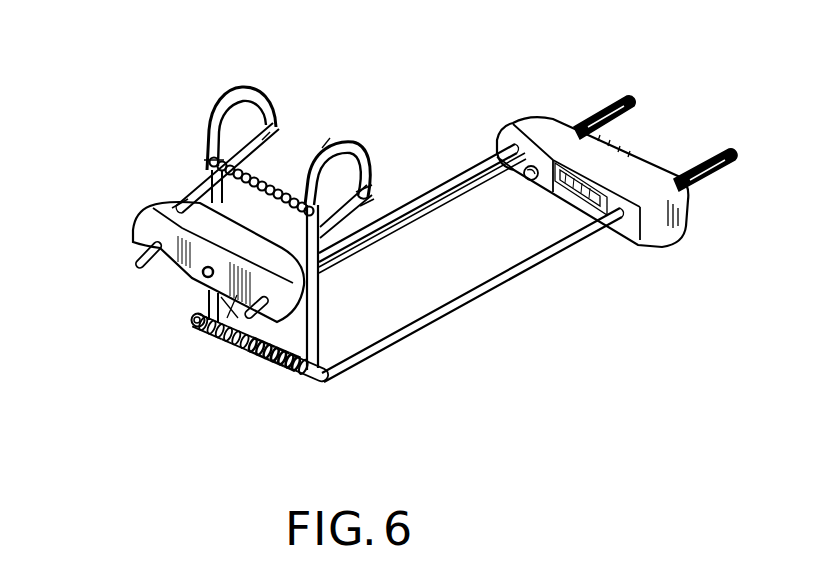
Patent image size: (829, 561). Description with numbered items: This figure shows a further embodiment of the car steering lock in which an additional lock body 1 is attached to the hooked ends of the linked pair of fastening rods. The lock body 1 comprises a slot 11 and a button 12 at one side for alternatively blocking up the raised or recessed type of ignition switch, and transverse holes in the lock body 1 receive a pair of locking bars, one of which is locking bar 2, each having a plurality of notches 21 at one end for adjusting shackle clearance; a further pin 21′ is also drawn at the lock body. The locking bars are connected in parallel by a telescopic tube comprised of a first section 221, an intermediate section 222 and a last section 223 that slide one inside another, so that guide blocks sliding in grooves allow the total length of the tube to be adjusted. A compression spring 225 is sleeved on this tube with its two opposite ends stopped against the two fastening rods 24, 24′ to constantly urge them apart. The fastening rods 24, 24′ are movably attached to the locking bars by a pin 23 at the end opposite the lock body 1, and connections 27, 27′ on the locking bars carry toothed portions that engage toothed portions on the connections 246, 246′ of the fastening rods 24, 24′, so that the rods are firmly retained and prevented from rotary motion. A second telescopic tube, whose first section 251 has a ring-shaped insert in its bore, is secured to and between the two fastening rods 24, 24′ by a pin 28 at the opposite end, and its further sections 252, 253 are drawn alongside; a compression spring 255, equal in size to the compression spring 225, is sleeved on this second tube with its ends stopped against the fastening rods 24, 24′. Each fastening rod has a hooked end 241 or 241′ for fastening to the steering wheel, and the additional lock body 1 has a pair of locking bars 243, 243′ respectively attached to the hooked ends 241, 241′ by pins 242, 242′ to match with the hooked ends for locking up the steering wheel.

The lock body 1 is at (533, 112).
The locking bar 2 is at (484, 166).
The slot 11 is at (562, 207).
The button 12 is at (523, 178).
The notches 21 is at (712, 158).
The contact pin 21′ is at (600, 103).
The pin 23 is at (332, 388).
The fastening rod 24 is at (318, 316).
The fastening rod 24′ is at (200, 294).
The connection 27 is at (309, 382).
The connection 27′ is at (192, 320).
The pin 28 is at (355, 250).
The first section 221 is at (222, 333).
The intermediate section 222 is at (257, 358).
The last section 223 is at (279, 367).
The compression spring 225 is at (264, 362).
The hooked end 241 is at (362, 139).
The hooked end 241′ is at (278, 19).
The pin 242 is at (369, 183).
The pin 242′ is at (348, 51).
The locking bar 243 is at (358, 205).
The locking bar 243′ is at (186, 204).
The connection 246 is at (298, 382).
The connection 246′ is at (200, 328).
The first section 251 is at (207, 156).
The coil spring 252 is at (282, 190).
The spring arm 253 is at (262, 168).
The compression spring 255 is at (323, 146).